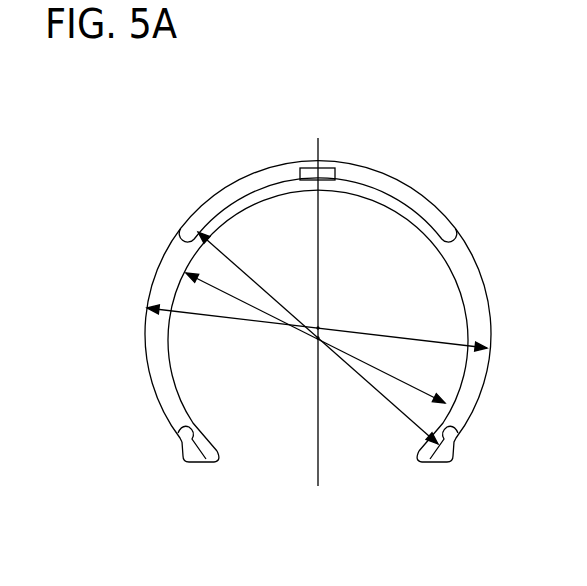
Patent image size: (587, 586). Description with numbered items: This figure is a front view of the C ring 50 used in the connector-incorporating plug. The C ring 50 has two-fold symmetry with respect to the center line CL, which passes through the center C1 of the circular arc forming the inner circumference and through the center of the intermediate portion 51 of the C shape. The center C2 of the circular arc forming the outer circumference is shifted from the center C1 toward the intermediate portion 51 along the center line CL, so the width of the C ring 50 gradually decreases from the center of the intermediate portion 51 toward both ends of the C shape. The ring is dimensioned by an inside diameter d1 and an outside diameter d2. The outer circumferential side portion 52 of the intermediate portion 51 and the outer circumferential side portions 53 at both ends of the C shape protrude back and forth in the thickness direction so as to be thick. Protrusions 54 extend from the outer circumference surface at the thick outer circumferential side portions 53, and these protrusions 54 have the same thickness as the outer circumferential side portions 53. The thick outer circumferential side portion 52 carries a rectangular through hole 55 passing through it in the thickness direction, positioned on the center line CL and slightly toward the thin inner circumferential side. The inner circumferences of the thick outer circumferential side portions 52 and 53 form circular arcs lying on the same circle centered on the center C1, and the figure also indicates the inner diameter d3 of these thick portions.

The C ring 50 is at (193, 197).
The intermediate portion 51 is at (290, 161).
The outer circumferential side portion 52 is at (413, 193).
The outer circumferential side portions 53 is at (178, 429).
The protrusions 54 is at (183, 464).
The through hole 55 is at (328, 170).
The center of the circular arc forming the inner circumference C1 is at (318, 338).
The center of the circular arc forming the outer circumference C2 is at (318, 328).
The center line CL is at (319, 482).
The inside diameter d1 is at (423, 392).
The outside diameter d2 is at (452, 343).
The inner diameter of the outer circumferential side portions d3 is at (421, 428).